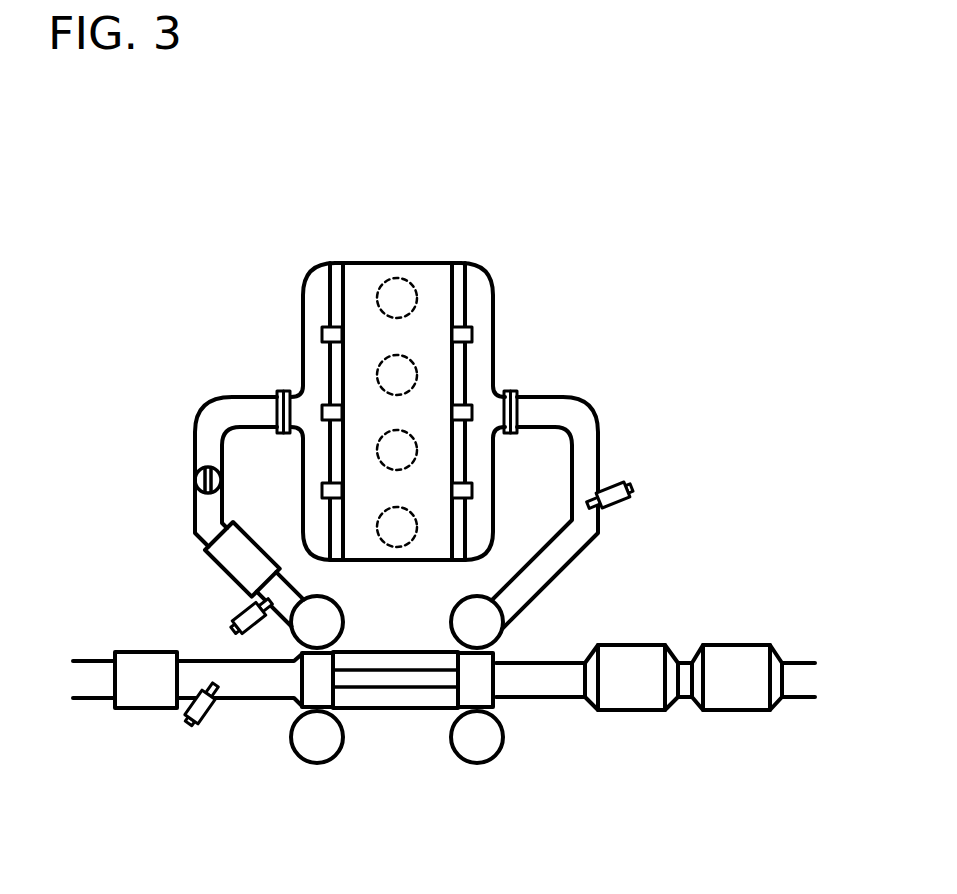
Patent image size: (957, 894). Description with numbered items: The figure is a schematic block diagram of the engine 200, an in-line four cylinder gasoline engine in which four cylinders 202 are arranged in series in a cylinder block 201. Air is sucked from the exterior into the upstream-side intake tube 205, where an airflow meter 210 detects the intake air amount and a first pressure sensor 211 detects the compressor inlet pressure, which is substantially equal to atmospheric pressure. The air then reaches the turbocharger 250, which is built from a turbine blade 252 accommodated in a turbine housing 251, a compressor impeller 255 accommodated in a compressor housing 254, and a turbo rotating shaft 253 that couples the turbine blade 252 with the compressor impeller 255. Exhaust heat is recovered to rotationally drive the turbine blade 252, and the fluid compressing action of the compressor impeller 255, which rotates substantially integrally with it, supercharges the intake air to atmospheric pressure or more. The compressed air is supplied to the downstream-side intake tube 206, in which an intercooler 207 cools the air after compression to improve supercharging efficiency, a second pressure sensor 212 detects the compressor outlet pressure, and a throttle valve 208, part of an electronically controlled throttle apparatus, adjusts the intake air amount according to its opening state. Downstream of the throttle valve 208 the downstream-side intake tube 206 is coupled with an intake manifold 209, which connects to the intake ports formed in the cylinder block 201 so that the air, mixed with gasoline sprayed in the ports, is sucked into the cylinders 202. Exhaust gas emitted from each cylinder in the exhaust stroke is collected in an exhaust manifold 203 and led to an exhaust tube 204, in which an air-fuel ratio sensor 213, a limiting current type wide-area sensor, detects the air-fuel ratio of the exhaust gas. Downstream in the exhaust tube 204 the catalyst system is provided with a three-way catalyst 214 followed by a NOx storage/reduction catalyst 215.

The engine 200 is at (666, 180).
The cylinder block 201 is at (368, 263).
The cylinders 202 is at (412, 280).
The exhaust manifold 203 is at (483, 268).
The exhaust tube 204 is at (585, 455).
The upstream-side intake tube 205 is at (96, 688).
The downstream-side intake tube 206 is at (207, 414).
The intercooler 207 is at (207, 552).
The throttle valve 208 is at (196, 480).
The intake manifold 209 is at (316, 450).
The airflow meter 210 is at (115, 653).
The first pressure sensor 211 is at (190, 721).
The second pressure sensor 212 is at (236, 612).
The air-fuel ratio sensor 213 is at (633, 490).
The three-way catalyst 214 is at (630, 645).
The NOx storage/reduction catalyst 215 is at (736, 645).
The turbocharger 250 is at (408, 766).
The turbine housing 251 is at (486, 743).
The turbine blade 252 is at (500, 655).
The turbo rotating shaft 253 is at (395, 680).
The compressor housing 254 is at (315, 762).
The compressor impeller 255 is at (293, 699).